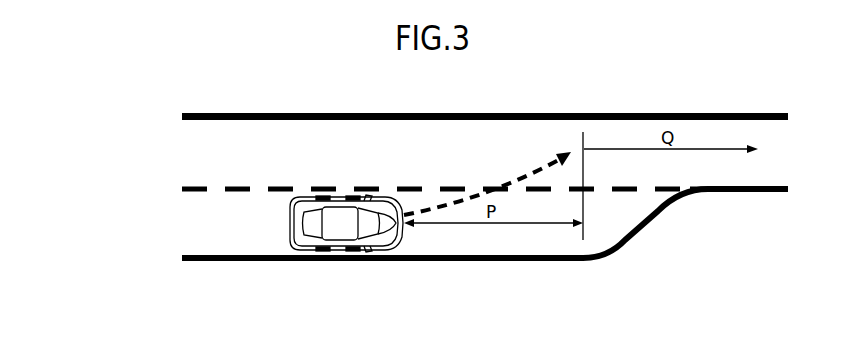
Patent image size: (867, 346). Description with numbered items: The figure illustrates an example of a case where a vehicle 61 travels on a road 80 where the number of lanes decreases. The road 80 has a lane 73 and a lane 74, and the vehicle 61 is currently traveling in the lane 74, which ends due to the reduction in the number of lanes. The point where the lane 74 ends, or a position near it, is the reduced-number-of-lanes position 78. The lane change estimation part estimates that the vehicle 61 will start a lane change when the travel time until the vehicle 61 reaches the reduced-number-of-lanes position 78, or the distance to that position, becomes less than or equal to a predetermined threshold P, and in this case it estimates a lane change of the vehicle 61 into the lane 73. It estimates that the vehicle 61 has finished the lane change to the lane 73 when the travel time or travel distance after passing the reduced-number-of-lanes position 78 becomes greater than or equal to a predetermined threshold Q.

The vehicle 61 is at (384, 196).
The lane 73 is at (176, 118).
The lane 74 is at (176, 190).
The reduced-number-of-lanes position 78 is at (583, 134).
The road 80 is at (129, 137).